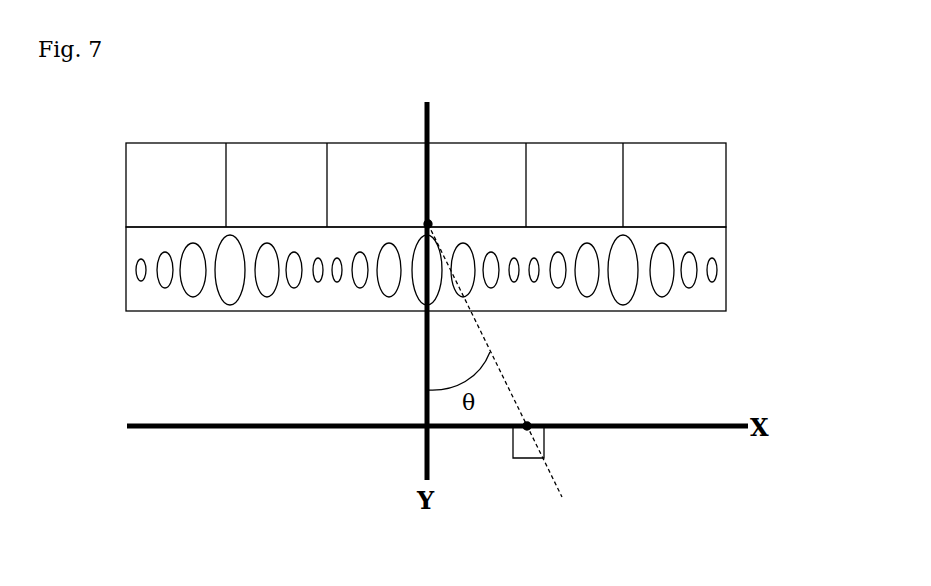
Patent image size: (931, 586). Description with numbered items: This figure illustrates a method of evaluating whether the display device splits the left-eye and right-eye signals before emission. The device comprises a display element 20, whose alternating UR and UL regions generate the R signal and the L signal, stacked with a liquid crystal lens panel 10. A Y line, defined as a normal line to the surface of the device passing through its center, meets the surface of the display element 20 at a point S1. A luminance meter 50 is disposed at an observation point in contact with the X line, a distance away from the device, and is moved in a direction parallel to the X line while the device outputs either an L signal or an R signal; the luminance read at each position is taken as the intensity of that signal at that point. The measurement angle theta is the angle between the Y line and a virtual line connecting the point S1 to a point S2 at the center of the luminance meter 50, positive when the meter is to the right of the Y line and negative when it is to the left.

The liquid crystal lens panel 10 is at (710, 297).
The display element 20 is at (713, 182).
The luminance meter 50 is at (540, 437).
The point S1 is at (434, 216).
The point S2 is at (533, 419).